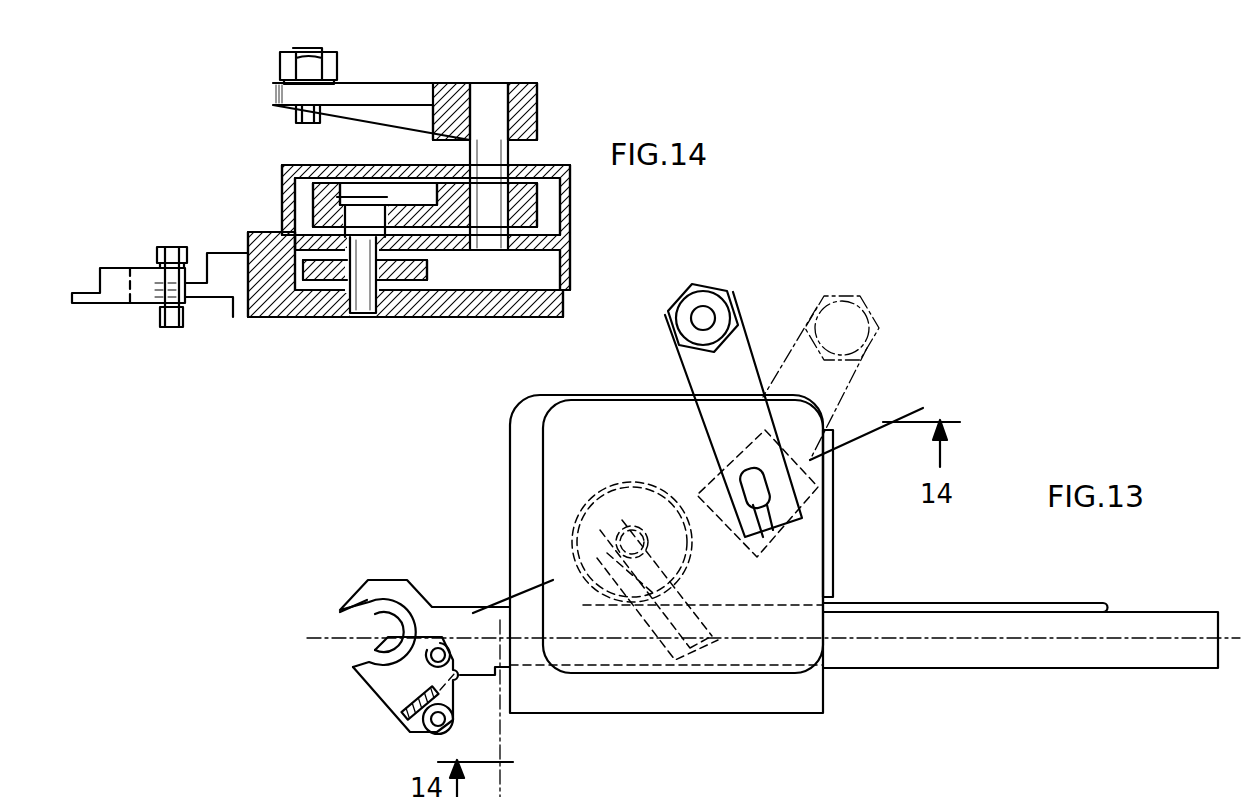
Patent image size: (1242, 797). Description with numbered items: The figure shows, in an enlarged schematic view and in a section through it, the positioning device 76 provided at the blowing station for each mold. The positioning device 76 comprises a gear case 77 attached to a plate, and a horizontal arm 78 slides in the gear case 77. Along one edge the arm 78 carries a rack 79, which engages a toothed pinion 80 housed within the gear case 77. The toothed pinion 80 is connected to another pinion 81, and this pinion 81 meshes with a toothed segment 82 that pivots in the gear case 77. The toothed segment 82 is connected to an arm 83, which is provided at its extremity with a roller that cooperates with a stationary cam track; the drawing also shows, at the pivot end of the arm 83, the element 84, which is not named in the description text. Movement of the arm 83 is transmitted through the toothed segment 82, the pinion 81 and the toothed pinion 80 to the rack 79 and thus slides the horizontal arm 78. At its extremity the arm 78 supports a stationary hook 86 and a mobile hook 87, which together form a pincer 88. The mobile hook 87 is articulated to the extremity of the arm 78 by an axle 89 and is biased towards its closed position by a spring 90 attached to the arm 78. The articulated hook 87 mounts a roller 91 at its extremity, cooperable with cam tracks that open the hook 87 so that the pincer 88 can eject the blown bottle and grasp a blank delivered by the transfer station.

In FIG. 14, the positioning device 76 is at (570, 222).
In FIG. 14, the gear case 77 is at (267, 260).
In FIG. 14, the horizontal arm 78 is at (232, 265).
In FIG. 13, the horizontal arm 78 is at (1058, 640).
In FIG. 13, the rack 79 is at (882, 603).
In FIG. 14, the toothed pinion 80 is at (427, 267).
In FIG. 13, the toothed pinion 80 is at (627, 507).
In FIG. 14, the pinion 81 is at (387, 212).
In FIG. 14, the toothed segment 82 is at (370, 187).
In FIG. 13, the toothed segment 82 is at (578, 573).
In FIG. 14, the arm 83 is at (397, 97).
In FIG. 13, the arm 83 is at (693, 352).
In FIG. 14, the nut 84 is at (280, 63).
In FIG. 13, the nut 84 is at (709, 302).
In FIG. 13, the stationary hook 86 is at (383, 595).
In FIG. 13, the mobile hook 87 is at (397, 683).
In FIG. 14, the pincer 88 is at (73, 288).
In FIG. 13, the pincer 88 is at (368, 641).
In FIG. 13, the axle 89 is at (483, 644).
In FIG. 13, the spring 90 is at (407, 720).
In FIG. 13, the roller 91 is at (447, 727).